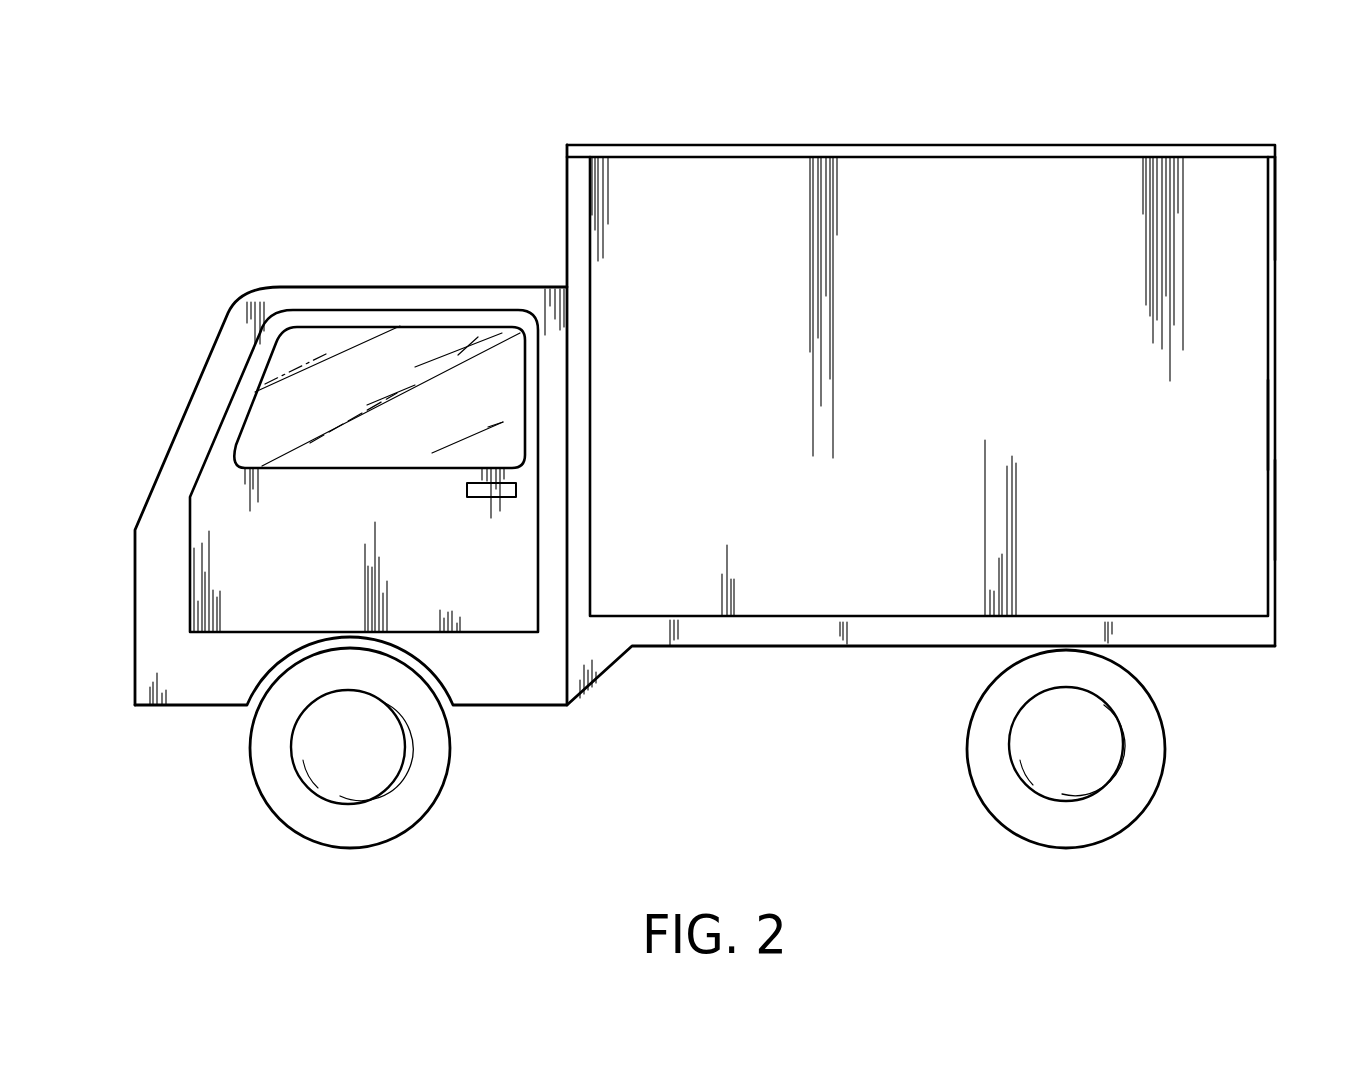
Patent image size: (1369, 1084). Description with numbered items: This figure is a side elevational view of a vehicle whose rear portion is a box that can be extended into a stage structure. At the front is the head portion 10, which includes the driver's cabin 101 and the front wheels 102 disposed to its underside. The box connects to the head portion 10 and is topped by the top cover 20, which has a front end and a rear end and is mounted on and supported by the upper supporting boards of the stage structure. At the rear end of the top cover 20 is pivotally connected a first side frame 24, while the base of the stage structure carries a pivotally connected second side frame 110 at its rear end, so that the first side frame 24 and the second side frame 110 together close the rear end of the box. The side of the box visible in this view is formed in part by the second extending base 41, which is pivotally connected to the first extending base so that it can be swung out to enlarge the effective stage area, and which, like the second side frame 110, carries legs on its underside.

The head portion 10 is at (260, 276).
The top cover 20 is at (1148, 152).
The first side frame 24 is at (1272, 256).
The second extending base 41 is at (1225, 442).
The driver's cabin 101 is at (258, 466).
The front wheels 102 is at (397, 815).
The second side frame 110 is at (1273, 530).